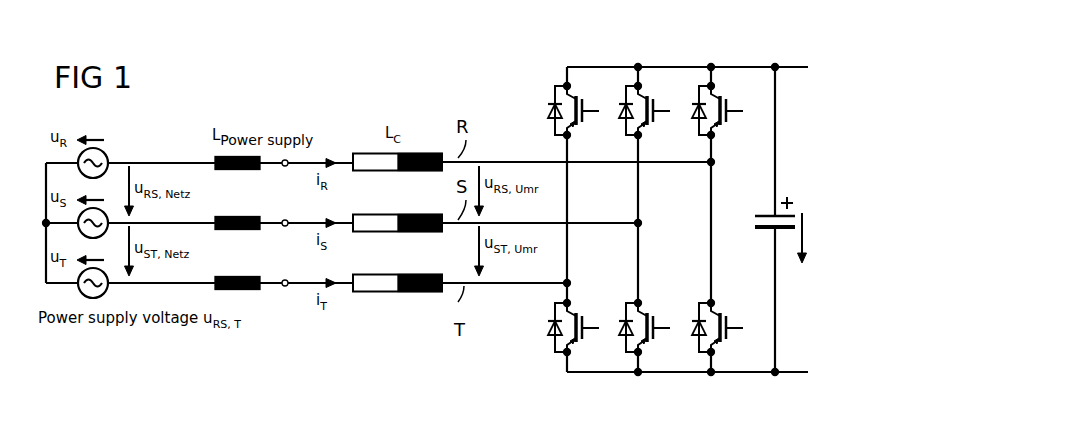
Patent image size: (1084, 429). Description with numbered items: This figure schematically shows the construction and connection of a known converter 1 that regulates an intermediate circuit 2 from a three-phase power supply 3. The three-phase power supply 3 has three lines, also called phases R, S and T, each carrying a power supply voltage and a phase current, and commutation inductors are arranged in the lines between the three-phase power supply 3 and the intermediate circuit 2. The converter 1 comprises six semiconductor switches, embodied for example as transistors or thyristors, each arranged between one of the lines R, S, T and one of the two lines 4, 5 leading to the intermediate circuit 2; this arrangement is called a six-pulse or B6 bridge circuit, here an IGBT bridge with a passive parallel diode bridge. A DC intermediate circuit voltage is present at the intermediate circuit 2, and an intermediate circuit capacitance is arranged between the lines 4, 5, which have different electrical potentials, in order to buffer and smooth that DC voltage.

The converter 1 is at (534, 354).
The intermediate circuit 2 is at (787, 66).
The three-phase power supply 3 is at (372, 310).
The line 4 is at (729, 66).
The line 5 is at (797, 371).